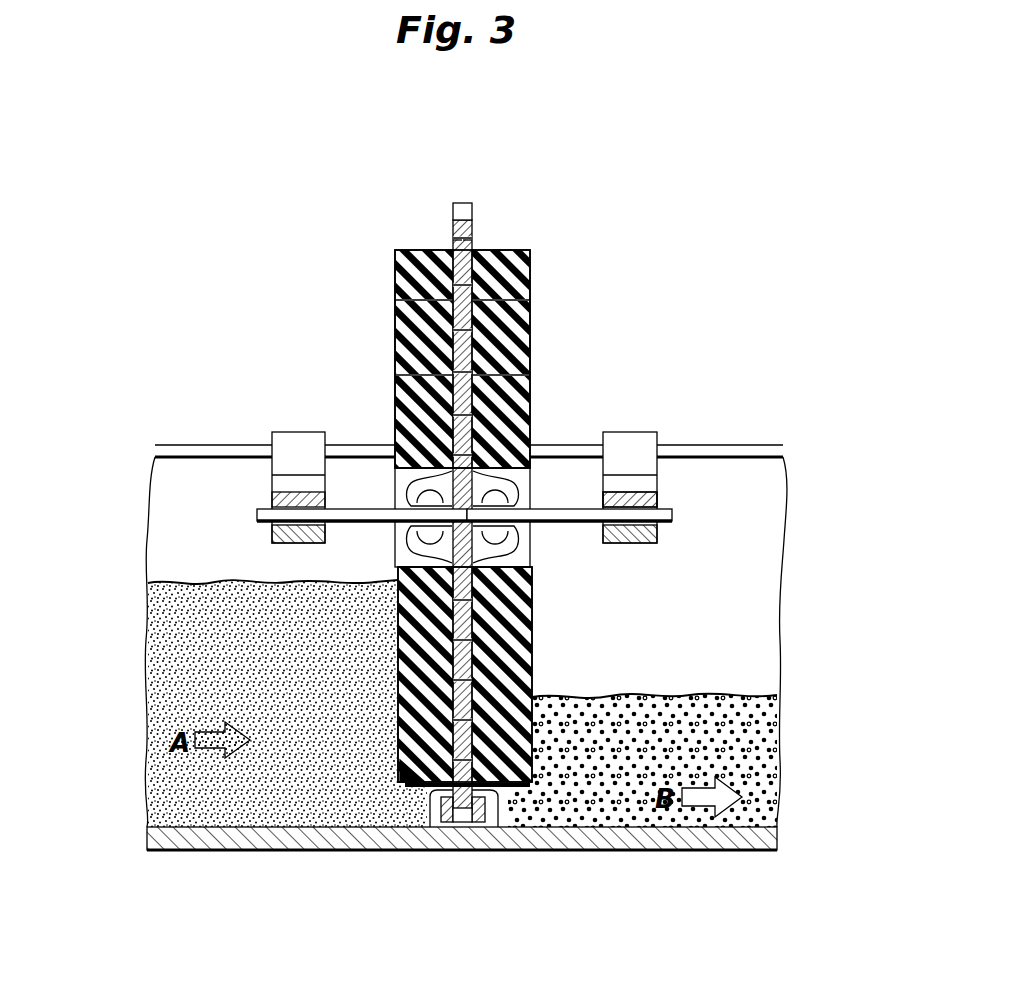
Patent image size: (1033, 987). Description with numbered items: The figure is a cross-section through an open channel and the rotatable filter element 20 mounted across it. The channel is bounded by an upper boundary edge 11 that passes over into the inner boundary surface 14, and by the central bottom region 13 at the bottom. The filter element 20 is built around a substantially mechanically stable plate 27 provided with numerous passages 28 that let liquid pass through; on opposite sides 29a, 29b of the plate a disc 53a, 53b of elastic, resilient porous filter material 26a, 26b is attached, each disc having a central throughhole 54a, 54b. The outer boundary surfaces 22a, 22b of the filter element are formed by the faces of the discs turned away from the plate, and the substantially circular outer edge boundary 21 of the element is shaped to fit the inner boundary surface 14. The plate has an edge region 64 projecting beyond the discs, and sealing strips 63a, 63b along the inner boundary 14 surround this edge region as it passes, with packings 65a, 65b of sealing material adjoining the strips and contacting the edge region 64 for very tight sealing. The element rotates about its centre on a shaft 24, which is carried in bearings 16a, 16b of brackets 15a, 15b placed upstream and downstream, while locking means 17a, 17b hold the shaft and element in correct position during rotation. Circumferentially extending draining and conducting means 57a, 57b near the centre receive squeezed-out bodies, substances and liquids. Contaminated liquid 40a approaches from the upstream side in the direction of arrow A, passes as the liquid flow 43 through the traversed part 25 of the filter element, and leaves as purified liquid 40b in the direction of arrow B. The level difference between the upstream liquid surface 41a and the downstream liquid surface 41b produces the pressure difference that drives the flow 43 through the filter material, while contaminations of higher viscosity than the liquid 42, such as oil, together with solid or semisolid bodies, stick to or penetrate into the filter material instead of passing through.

The upper boundary edge 11 is at (744, 446).
The central bottom region 13 is at (716, 850).
The inner boundary surface 14 is at (780, 486).
The bracket 15a is at (300, 440).
The bracket 15b is at (630, 440).
The bearing 16a is at (262, 515).
The bearing 16b is at (672, 520).
The locking means 17a is at (288, 480).
The locking means 17b is at (635, 482).
The filter element 20 is at (535, 263).
The outer edge boundary 21 is at (463, 203).
The outer boundary surface 22a is at (395, 330).
The outer boundary surface 22b is at (530, 332).
The shaft 24 is at (665, 512).
The traversed part of the filter element 25 is at (410, 760).
The filter material 26a is at (410, 374).
The filter material 26b is at (530, 358).
The plate 27 is at (440, 778).
The passages 28 is at (395, 300).
The side of the plate 29a is at (455, 240).
The side of the plate 29b is at (472, 240).
The contaminated liquid 40a is at (165, 600).
The purified liquid 40b is at (772, 734).
The upstream liquid surface 41a is at (222, 580).
The downstream liquid surface 41b is at (628, 696).
The liquid 42 is at (160, 666).
The liquid flow 43 is at (710, 696).
The disc of filter material 53a is at (395, 283).
The disc of filter material 53b is at (530, 298).
The central throughhole 54a is at (415, 556).
The central throughhole 54b is at (515, 558).
The draining and conducting means 57a is at (410, 490).
The draining and conducting means 57b is at (500, 490).
The sealing strip 63a is at (450, 800).
The sealing strip 63b is at (482, 800).
The edge region 64 is at (455, 222).
The packing 65a is at (445, 798).
The packing 65b is at (485, 798).